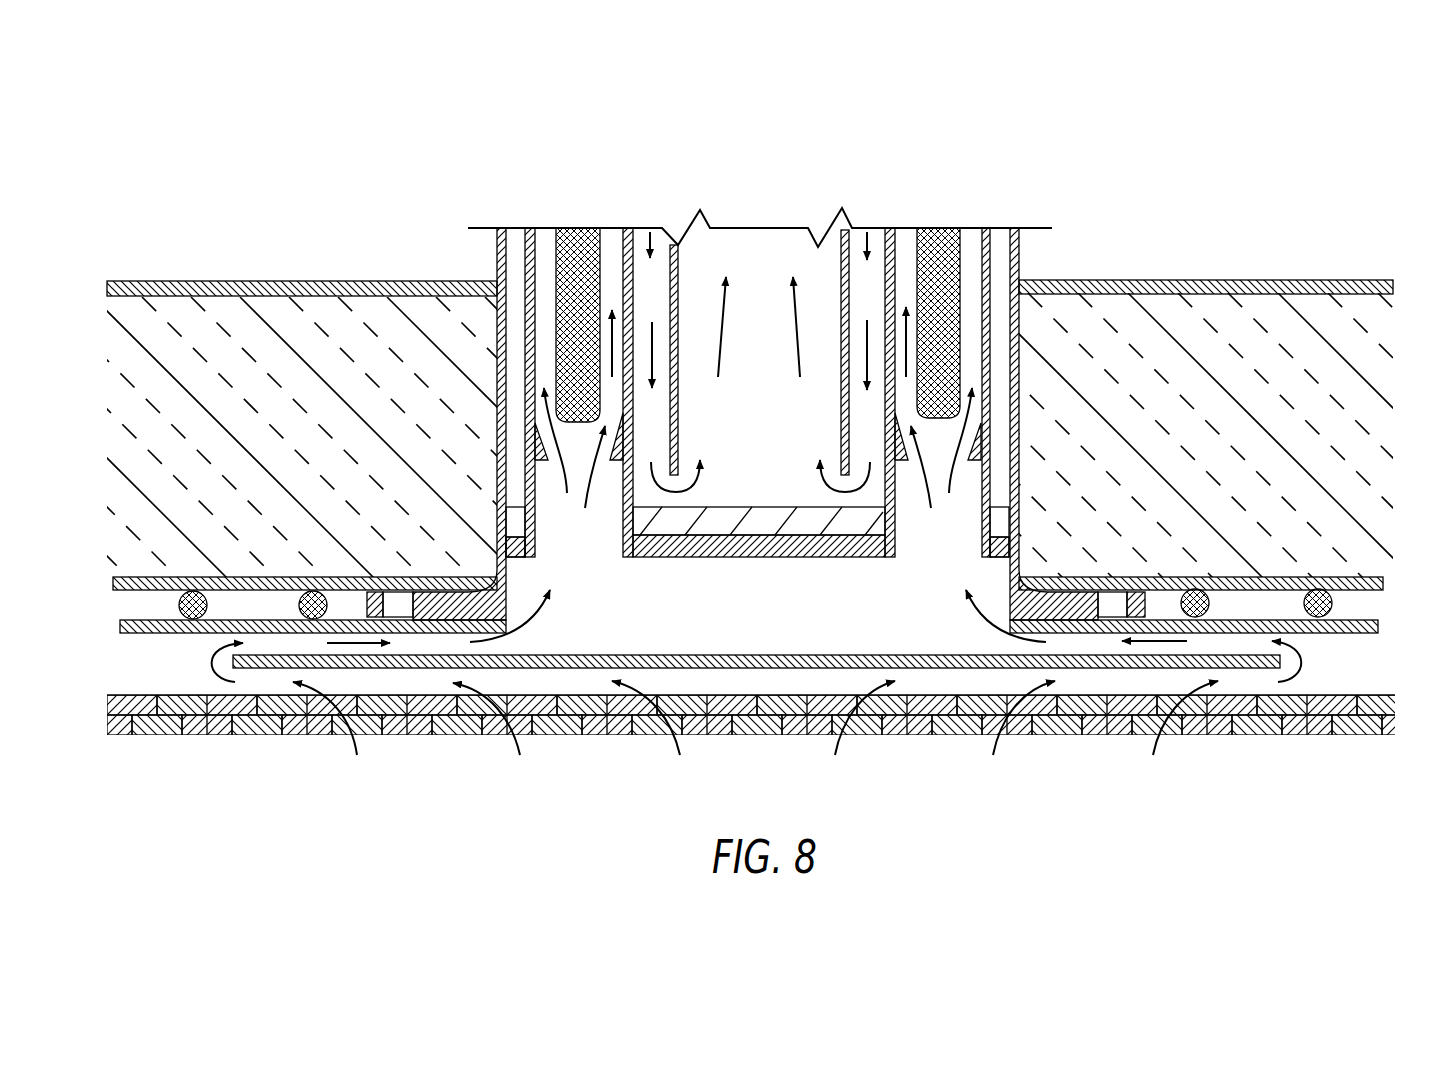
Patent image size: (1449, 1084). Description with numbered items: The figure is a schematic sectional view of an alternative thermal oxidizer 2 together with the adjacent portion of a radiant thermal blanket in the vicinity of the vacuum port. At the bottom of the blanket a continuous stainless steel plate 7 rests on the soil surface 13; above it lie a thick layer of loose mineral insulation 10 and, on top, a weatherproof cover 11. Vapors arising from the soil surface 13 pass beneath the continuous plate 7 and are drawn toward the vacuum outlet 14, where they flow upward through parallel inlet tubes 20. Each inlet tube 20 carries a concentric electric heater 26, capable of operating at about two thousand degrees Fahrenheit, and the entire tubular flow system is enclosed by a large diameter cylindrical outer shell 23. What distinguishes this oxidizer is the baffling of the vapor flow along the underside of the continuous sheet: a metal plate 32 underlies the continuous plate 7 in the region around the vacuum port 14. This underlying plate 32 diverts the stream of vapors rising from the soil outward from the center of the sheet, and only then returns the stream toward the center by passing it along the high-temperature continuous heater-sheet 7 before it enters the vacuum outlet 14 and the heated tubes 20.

The downhole tool 2 is at (777, 173).
The continuous stainless steel plate 7 is at (1370, 628).
The loose mineral insulation 10 is at (1240, 313).
The weatherproof cover 11 is at (317, 280).
The soil surface 13 is at (732, 697).
The vacuum outlet 14 is at (548, 638).
The parallel tubes 20 is at (530, 228).
The cylindrical outer shell 23 is at (1020, 259).
The electric heaters 26 is at (578, 228).
The metal plate 32 is at (823, 655).